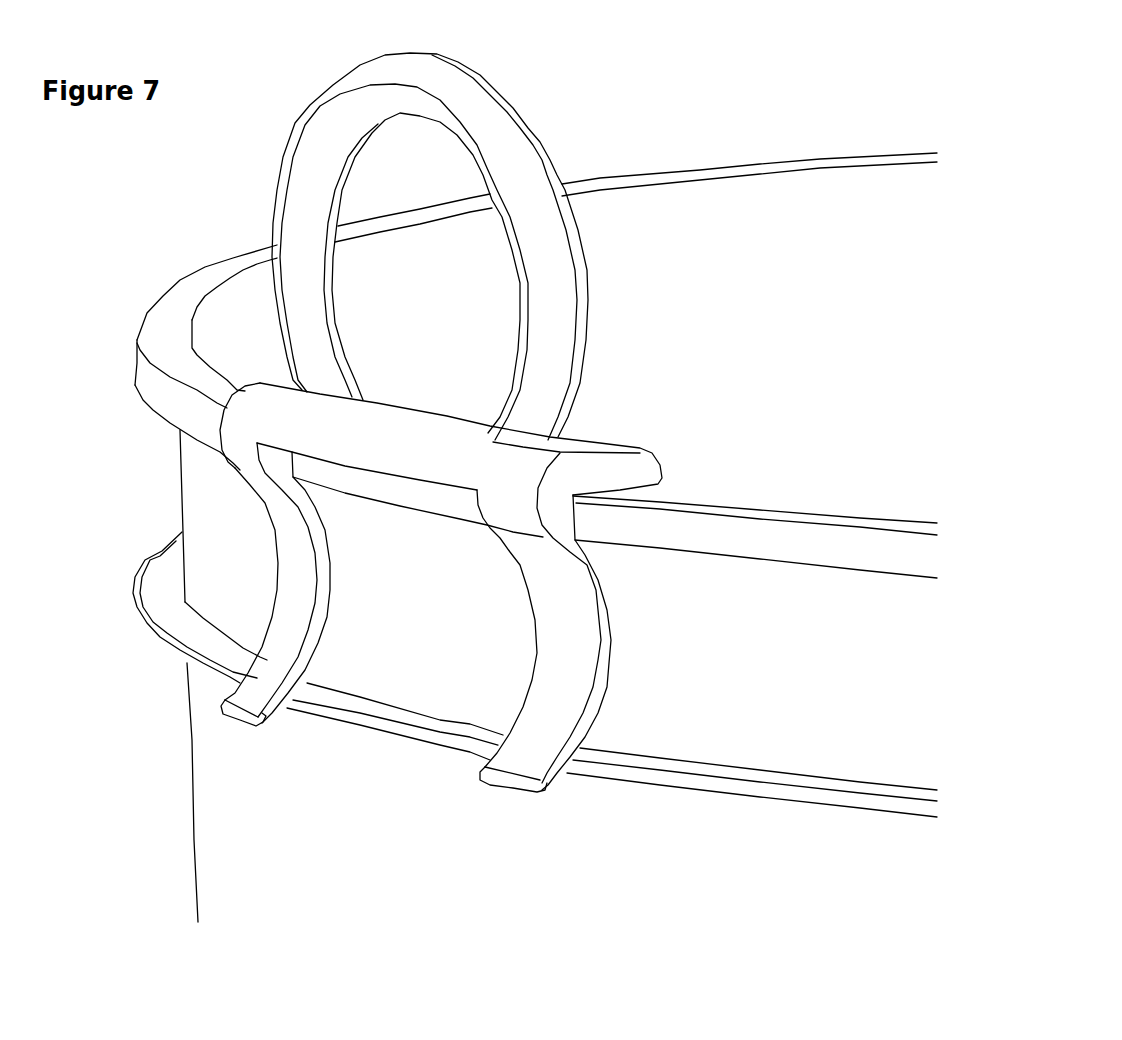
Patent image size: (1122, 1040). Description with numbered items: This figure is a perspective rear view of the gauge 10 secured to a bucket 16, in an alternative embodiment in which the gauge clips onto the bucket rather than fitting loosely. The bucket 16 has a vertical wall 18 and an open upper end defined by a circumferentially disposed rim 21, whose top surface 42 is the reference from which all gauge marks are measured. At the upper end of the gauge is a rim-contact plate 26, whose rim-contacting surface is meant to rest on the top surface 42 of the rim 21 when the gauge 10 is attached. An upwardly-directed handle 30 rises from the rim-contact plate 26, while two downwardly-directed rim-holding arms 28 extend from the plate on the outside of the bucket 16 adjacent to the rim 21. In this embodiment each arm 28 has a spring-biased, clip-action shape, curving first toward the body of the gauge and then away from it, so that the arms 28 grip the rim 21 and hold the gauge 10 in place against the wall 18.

The gauge 10 is at (630, 319).
The bucket 16 is at (777, 683).
The vertical wall 18 is at (837, 370).
The rim 21 is at (150, 392).
The rim-contact plate 26 is at (382, 442).
The rim-holding arms 28 is at (553, 655).
The handle 30 is at (477, 110).
The top surface 42 is at (165, 313).